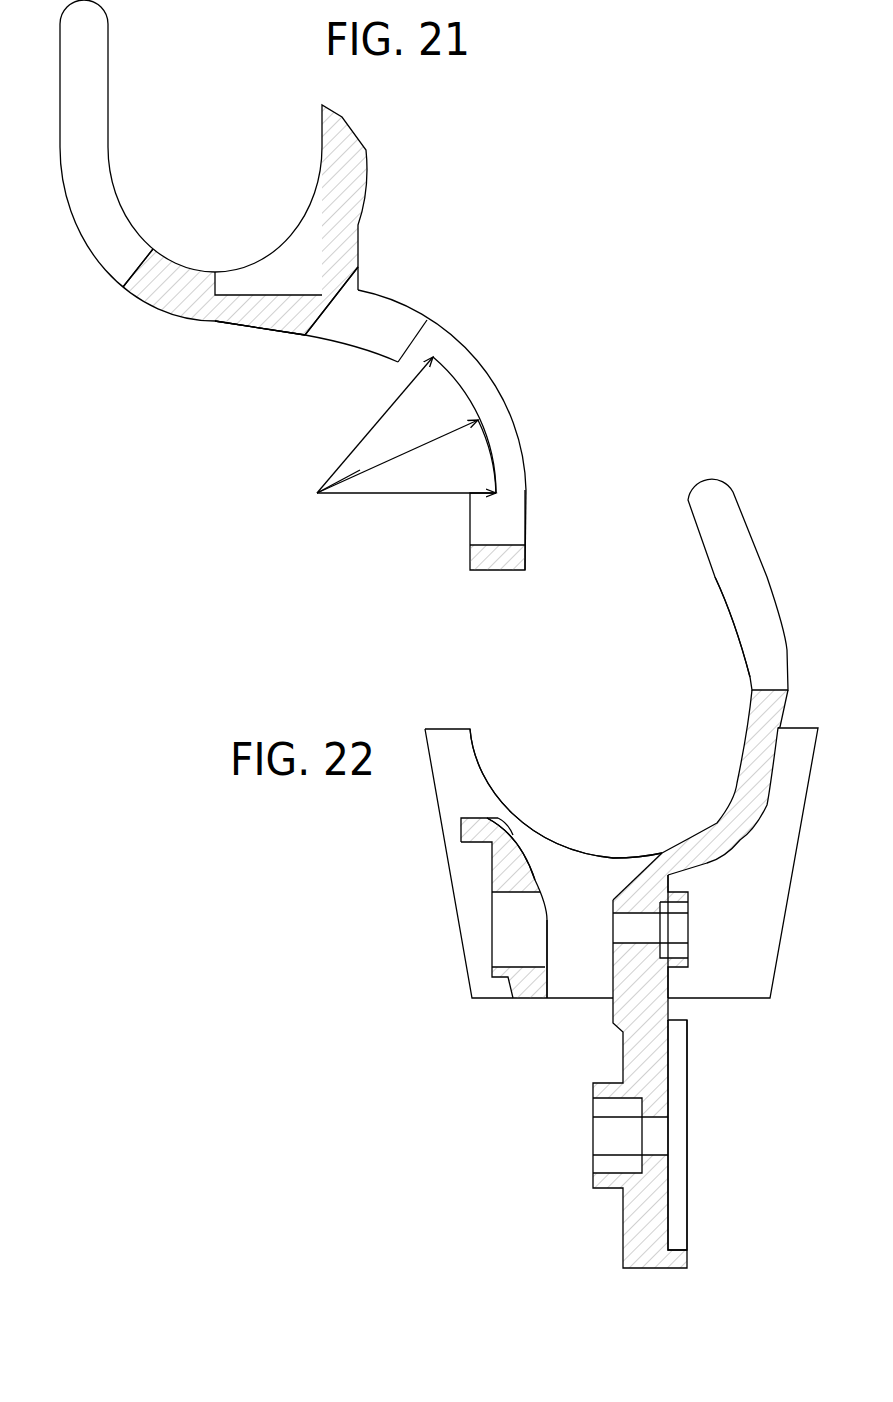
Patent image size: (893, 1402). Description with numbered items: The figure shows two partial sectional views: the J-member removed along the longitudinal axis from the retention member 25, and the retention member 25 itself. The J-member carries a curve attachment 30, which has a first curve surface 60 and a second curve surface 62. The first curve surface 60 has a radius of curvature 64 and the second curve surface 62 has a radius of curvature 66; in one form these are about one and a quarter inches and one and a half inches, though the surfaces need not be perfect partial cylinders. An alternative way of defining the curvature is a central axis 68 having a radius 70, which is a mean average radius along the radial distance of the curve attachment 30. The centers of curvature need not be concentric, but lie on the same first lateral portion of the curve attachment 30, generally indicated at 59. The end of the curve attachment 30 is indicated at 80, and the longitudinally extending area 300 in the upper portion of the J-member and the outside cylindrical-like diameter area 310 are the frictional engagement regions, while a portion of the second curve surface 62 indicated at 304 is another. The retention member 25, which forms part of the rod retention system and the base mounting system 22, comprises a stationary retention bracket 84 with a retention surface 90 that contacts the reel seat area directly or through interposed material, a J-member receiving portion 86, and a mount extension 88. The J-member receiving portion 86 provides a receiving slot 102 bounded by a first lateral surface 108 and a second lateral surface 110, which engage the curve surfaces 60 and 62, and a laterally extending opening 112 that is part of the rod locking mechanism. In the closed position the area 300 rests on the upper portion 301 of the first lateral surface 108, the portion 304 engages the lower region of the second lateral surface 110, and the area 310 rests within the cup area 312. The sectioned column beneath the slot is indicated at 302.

In FIG. 21, the base mounting system 22 is at (400, 151).
In FIG. 21, the curve attachment 30 is at (380, 313).
In FIG. 21, the outside cylindrical-like diameter area 310 is at (123, 287).
In FIG. 21, the longitudinally extending area 300 is at (228, 325).
In FIG. 21, the first lateral portion 59 is at (263, 378).
In FIG. 21, the first curve surface 60 is at (400, 363).
In FIG. 21, the radius of curvature 66 is at (360, 435).
In FIG. 21, the radius 70 is at (377, 468).
In FIG. 21, the radius of curvature 64 is at (410, 497).
In FIG. 21, the end portion 80 is at (508, 531).
In FIG. 21, the portion of the curve surface 304 is at (502, 397).
In FIG. 21, the central axis 68 is at (493, 462).
In FIG. 21, the second curve surface 62 is at (526, 493).
In FIG. 22, the stationary retention bracket 84 is at (737, 537).
In FIG. 22, the retention surface 90 is at (715, 578).
In FIG. 22, the upper portion 301 is at (498, 818).
In FIG. 22, the first lateral surface 108 is at (512, 834).
In FIG. 22, the J-member receiving portion 86 is at (607, 812).
In FIG. 22, the cup area 312 is at (617, 855).
In FIG. 22, the second lateral surface 110 is at (637, 875).
In FIG. 22, the laterally extending opening 112 is at (503, 932).
In FIG. 22, the receiving slot 102 is at (594, 949).
In FIG. 22, the retention member 25 is at (425, 1019).
In FIG. 22, the column 302 is at (613, 1012).
In FIG. 22, the mount extension 88 is at (655, 1055).